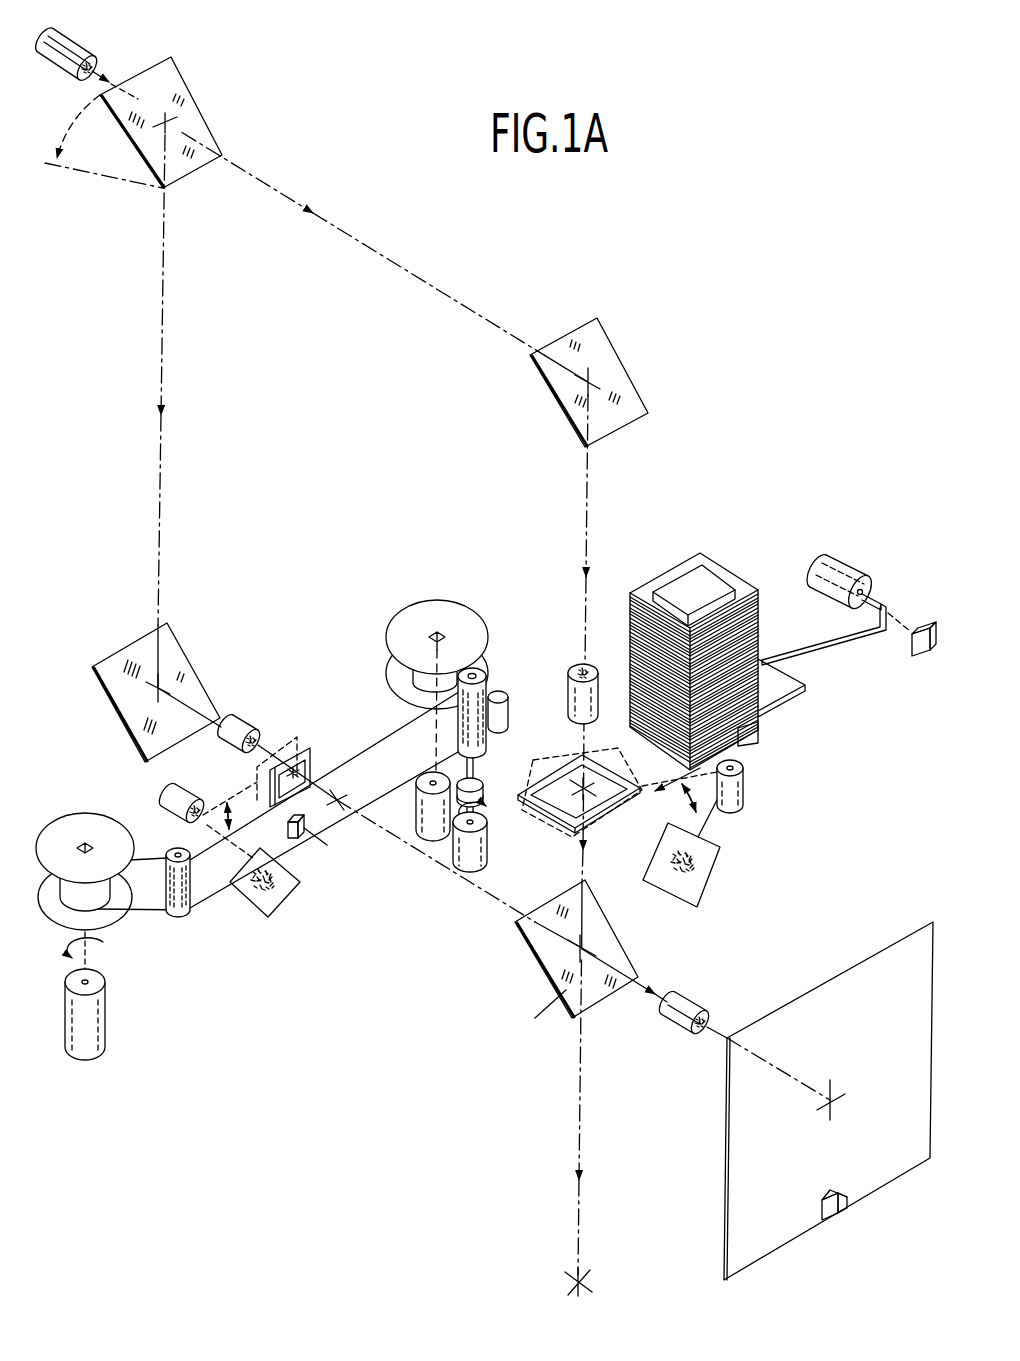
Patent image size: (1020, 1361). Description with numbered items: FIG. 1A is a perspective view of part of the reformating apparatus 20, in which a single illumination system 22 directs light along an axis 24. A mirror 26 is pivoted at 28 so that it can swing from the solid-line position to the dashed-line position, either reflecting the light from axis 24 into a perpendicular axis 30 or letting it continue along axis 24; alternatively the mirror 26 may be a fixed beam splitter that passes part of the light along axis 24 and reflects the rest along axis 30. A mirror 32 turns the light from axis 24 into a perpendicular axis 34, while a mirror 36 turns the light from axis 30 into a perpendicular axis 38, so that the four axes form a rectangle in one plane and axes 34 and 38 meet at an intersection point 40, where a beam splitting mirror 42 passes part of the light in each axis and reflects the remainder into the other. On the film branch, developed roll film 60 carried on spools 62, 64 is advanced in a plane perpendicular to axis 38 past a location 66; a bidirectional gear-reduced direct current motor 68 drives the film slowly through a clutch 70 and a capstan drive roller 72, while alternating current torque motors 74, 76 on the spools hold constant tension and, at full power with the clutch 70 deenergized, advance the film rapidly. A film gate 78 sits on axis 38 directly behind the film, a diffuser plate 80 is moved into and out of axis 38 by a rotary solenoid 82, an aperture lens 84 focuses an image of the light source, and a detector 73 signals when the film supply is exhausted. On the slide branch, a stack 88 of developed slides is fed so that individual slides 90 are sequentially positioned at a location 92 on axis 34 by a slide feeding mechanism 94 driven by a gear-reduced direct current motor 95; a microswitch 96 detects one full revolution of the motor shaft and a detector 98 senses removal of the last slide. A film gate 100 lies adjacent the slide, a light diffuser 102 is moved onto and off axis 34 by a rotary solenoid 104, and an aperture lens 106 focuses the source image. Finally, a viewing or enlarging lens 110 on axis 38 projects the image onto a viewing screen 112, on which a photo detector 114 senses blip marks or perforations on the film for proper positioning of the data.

The reformating apparatus 20 is at (587, 244).
The illumination system 22 is at (72, 51).
The axis 24 is at (108, 84).
The mirror 26 is at (180, 84).
The pivot 28 is at (160, 191).
The axis 30 is at (166, 380).
The mirror 32 is at (614, 370).
The axis 34 is at (588, 503).
The mirror 36 is at (115, 655).
The axis 38 is at (470, 883).
The intersection point 40 is at (585, 945).
The beam splitting mirror 42 is at (536, 1014).
The roll film 60 is at (368, 773).
The spool 62 is at (62, 818).
The spool 64 is at (465, 616).
The location 66 is at (342, 806).
The direct current motor 68 is at (486, 850).
The clutch 70 is at (481, 786).
The capstan drive roller 72 is at (482, 679).
The detector 73 is at (300, 832).
The torque motor 74 is at (92, 1010).
The torque motor 76 is at (424, 810).
The film gate 78 is at (312, 747).
The diffuser plate 80 is at (268, 900).
The rotary solenoid 82 is at (185, 797).
The aperture lens 84 is at (240, 730).
The stack of slides 88 is at (756, 615).
The slide 90 is at (600, 822).
The location 92 is at (578, 793).
The slide feeding mechanism 94 is at (851, 643).
The direct current motor 95 is at (848, 575).
The microswitch 96 is at (927, 655).
The detector 98 is at (758, 737).
The film gate 100 is at (550, 756).
The light diffuser 102 is at (706, 868).
The rotary solenoid 104 is at (745, 785).
The aperture lens 106 is at (573, 695).
The viewing or enlarging lens 110 is at (705, 1003).
The viewing screen 112 is at (840, 972).
The photo detector 114 is at (836, 1207).